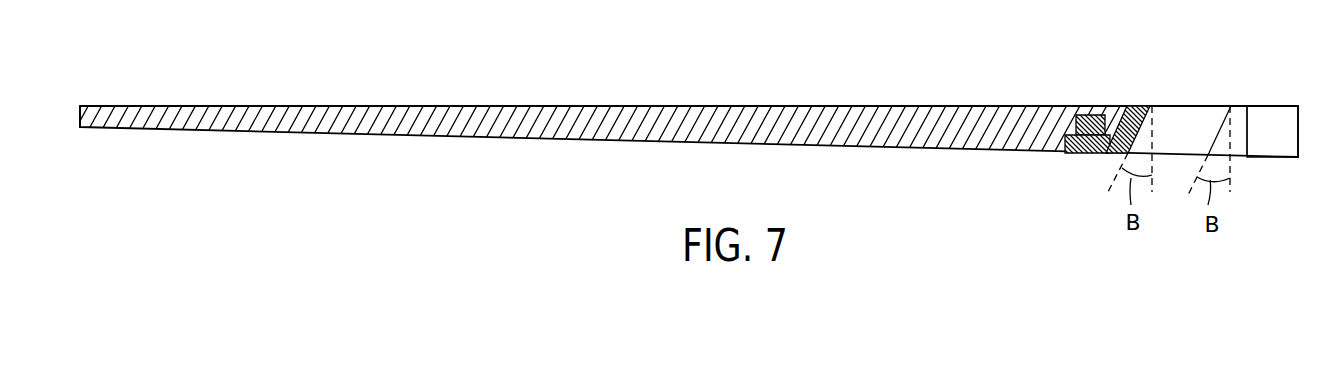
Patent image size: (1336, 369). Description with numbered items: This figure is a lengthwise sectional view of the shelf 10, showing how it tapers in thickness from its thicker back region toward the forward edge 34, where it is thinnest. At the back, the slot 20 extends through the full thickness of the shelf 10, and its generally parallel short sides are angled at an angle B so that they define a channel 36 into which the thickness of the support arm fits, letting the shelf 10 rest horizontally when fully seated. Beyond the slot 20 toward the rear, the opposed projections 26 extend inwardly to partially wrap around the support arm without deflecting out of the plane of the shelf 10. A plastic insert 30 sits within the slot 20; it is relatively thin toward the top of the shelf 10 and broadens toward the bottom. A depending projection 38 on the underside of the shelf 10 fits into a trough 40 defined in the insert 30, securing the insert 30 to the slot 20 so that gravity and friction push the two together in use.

The shelf 10 is at (492, 101).
The forward edge 34 is at (77, 124).
The depending projection 38 is at (1094, 117).
The plastic insert 30 is at (1078, 152).
The trough 40 is at (1102, 152).
The channel 36 is at (1180, 125).
The slot 20 is at (1197, 110).
The opposed projections 26 is at (1275, 110).